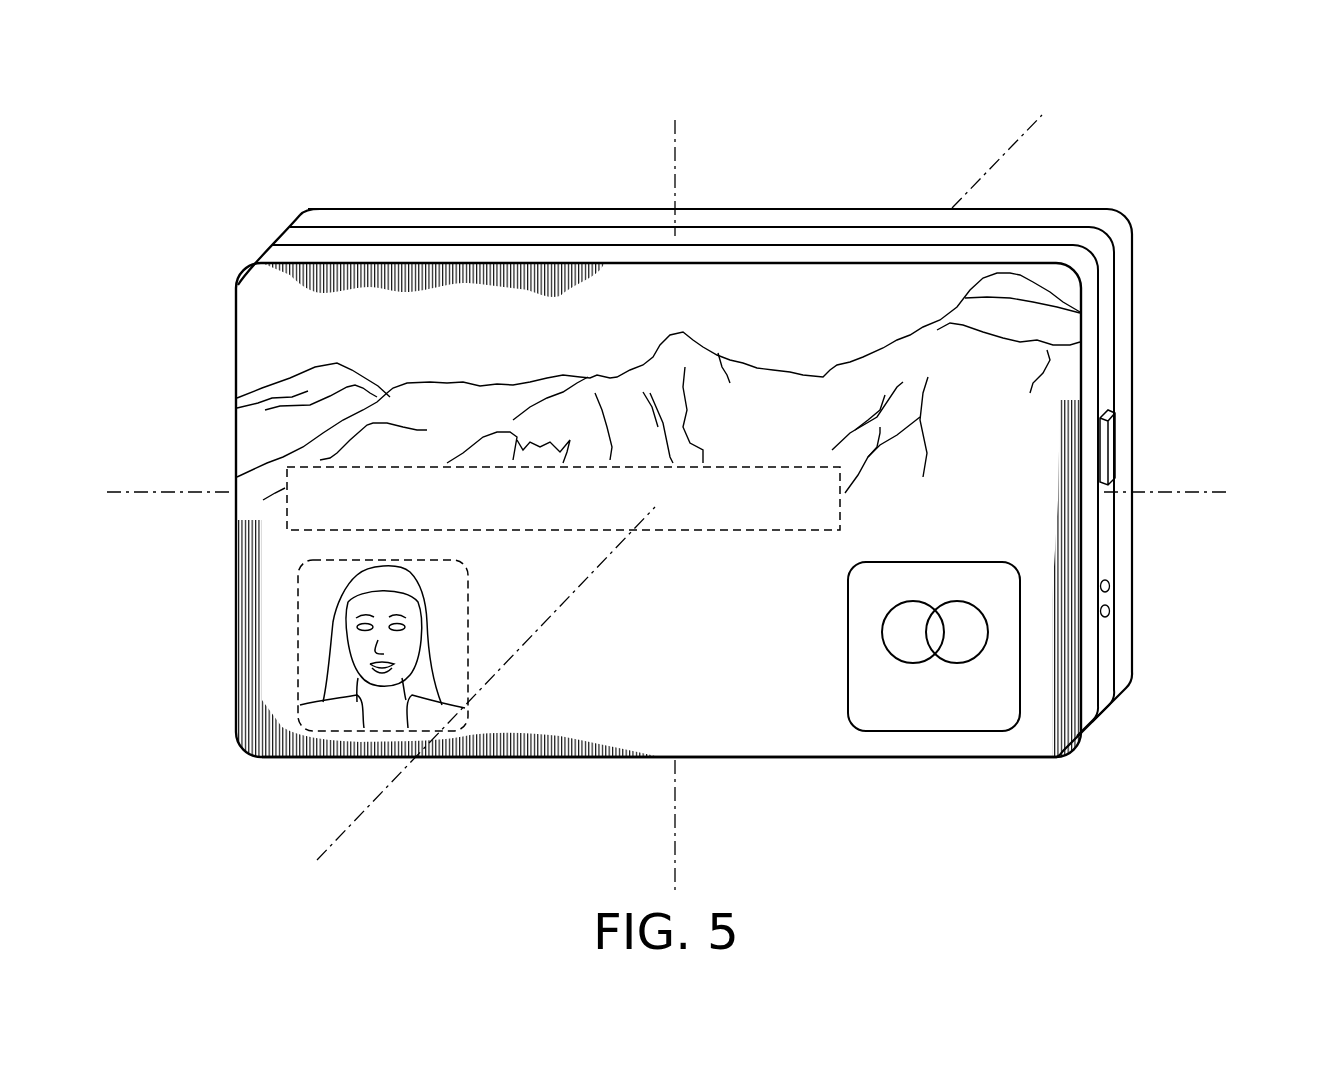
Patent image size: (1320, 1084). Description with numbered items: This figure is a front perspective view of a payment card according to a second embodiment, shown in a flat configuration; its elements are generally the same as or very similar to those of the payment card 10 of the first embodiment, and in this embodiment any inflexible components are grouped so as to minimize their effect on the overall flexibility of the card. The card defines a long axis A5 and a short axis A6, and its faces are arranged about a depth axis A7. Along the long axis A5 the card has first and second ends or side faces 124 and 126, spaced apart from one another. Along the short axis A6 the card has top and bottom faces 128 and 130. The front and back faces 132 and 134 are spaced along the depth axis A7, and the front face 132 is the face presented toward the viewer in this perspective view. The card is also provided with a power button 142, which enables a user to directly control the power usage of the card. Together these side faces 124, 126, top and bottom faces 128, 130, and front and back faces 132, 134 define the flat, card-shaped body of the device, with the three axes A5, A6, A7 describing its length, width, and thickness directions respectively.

The payment card 10 is at (1126, 180).
The first end or side face 124 is at (235, 450).
The second end or side face 126 is at (1125, 327).
The top face 128 is at (750, 220).
The bottom face 130 is at (608, 759).
The front face 132 is at (817, 730).
The back face 134 is at (1133, 584).
The power button 142 is at (1112, 432).
The long axis A5 is at (689, 493).
The short axis A6 is at (852, 490).
The depth axis A7 is at (467, 703).